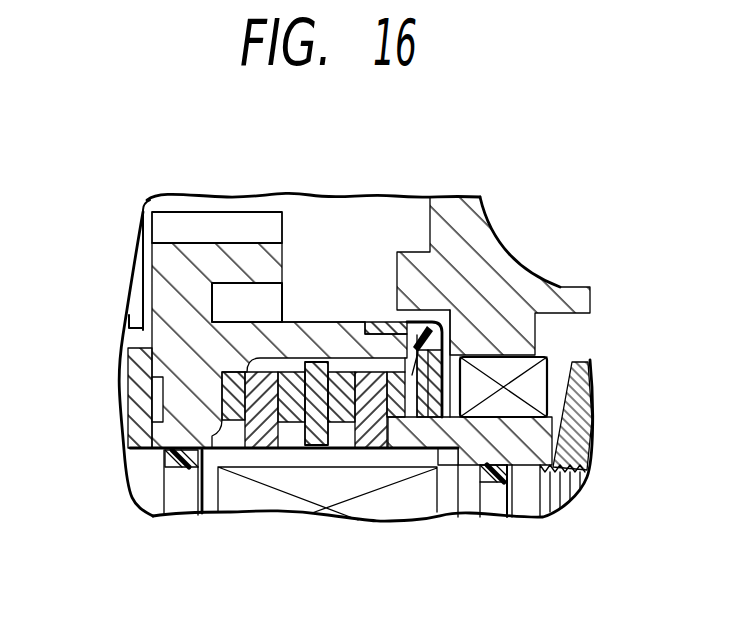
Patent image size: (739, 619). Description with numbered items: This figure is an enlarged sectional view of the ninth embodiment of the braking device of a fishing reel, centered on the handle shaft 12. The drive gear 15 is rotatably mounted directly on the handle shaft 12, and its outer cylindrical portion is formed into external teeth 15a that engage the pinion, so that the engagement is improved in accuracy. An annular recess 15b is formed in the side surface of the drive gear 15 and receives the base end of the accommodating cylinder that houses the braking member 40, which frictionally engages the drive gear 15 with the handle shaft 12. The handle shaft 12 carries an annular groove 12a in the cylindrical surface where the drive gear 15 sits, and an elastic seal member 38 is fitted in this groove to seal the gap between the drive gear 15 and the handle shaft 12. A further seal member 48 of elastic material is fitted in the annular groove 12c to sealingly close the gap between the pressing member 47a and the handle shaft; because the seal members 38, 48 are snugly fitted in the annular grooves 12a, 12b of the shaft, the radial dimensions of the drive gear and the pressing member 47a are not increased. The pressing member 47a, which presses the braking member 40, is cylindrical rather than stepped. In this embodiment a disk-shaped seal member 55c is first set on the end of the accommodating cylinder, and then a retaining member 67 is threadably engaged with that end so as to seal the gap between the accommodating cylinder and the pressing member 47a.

The handle shaft 12 is at (523, 495).
The annular groove 12a is at (162, 468).
The annular groove 12b is at (288, 500).
The annular groove 12c is at (518, 478).
The drive gear 15 is at (178, 330).
The external teeth 15a is at (221, 233).
The annular recess 15b is at (288, 333).
The elastic seal member 38 is at (191, 468).
The braking member 40 is at (325, 327).
The pressing member 47a is at (533, 442).
The seal member 48 is at (492, 483).
The disk-shaped seal member 55c is at (443, 333).
The retaining member 67 is at (423, 343).